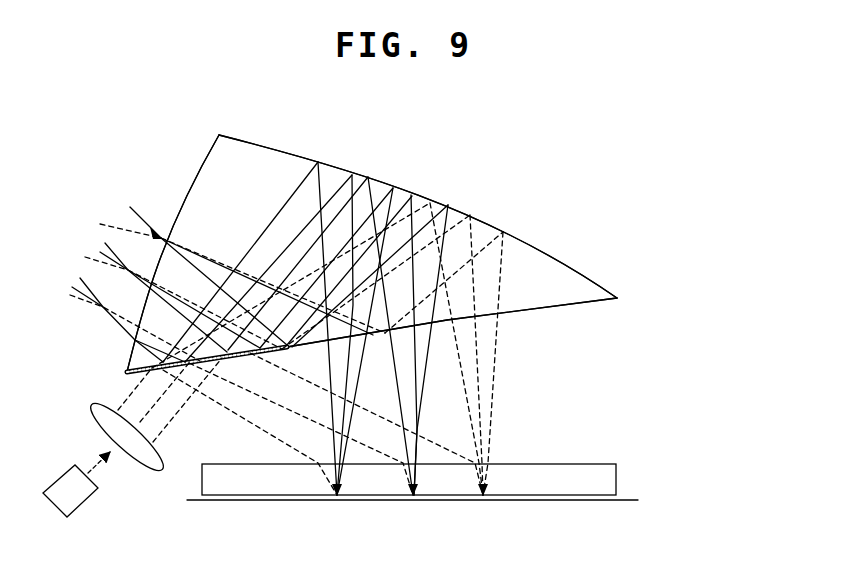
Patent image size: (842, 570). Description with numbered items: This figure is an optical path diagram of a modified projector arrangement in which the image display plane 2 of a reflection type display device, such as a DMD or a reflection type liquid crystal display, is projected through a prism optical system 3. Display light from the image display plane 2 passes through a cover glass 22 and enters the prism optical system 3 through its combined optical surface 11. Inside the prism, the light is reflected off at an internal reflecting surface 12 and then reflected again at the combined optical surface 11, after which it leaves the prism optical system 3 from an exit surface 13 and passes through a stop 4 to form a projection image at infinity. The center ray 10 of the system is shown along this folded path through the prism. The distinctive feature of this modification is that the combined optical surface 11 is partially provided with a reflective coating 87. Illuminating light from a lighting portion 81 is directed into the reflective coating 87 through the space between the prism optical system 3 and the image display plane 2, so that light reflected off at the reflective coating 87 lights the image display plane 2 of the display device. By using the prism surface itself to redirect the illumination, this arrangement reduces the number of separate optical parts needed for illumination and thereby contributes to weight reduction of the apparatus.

The image display plane 2 is at (476, 500).
The prism optical system 3 is at (583, 293).
The stop 4 is at (96, 313).
The center ray 10 is at (110, 243).
The combined optical surface 11 is at (515, 312).
The internal reflecting surface 12 is at (347, 167).
The exit surface 13 is at (128, 368).
The cover glass 22 is at (602, 480).
The lighting portion 81 is at (167, 465).
The reflective coating 87 is at (125, 378).